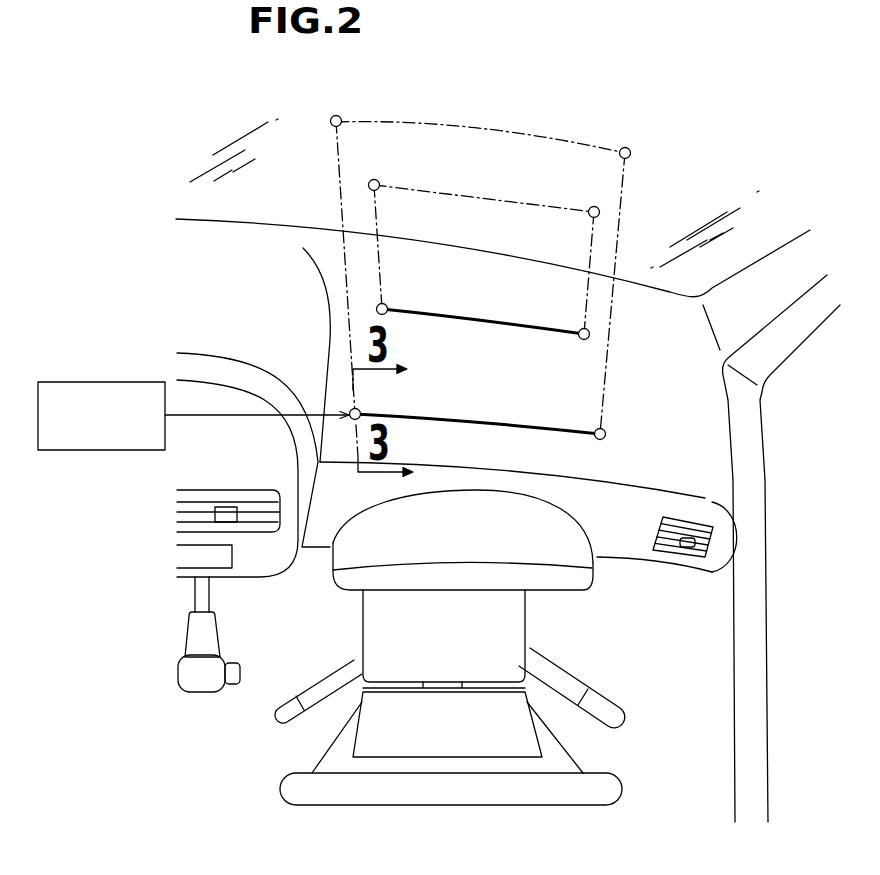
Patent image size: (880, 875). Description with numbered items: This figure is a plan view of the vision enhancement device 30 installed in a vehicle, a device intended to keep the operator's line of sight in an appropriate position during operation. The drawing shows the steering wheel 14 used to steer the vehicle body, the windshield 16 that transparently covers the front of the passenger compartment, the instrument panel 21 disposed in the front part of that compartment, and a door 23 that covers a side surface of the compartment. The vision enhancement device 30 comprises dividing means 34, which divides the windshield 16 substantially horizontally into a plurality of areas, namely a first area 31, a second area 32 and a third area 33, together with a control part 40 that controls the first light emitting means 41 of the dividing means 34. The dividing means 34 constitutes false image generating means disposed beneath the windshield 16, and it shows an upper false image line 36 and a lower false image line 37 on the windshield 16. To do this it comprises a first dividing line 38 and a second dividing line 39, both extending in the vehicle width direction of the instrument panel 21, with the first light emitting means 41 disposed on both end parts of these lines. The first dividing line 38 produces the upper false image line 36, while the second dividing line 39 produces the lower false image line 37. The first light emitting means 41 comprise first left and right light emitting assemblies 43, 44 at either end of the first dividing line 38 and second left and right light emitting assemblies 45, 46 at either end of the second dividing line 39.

The steering wheel 14 is at (617, 773).
The windshield 16 is at (742, 203).
The instrument panel 21 is at (190, 217).
The door 23 is at (753, 457).
The vision enhancement device 30 is at (163, 88).
The first area 31 is at (481, 232).
The second area 32 is at (484, 210).
The third area 33 is at (520, 248).
The dividing means 34 is at (479, 308).
The upper false image line 36 is at (458, 127).
The lower false image line 37 is at (457, 190).
The first dividing line 38 is at (447, 417).
The second dividing line 39 is at (463, 300).
The control part 40 is at (98, 380).
The first light emitting means 41 is at (360, 323).
The first left light emitting assembly 43 is at (348, 405).
The first right light emitting assembly 44 is at (610, 423).
The second left light emitting assembly 45 is at (388, 298).
The second right light emitting assembly 46 is at (597, 323).